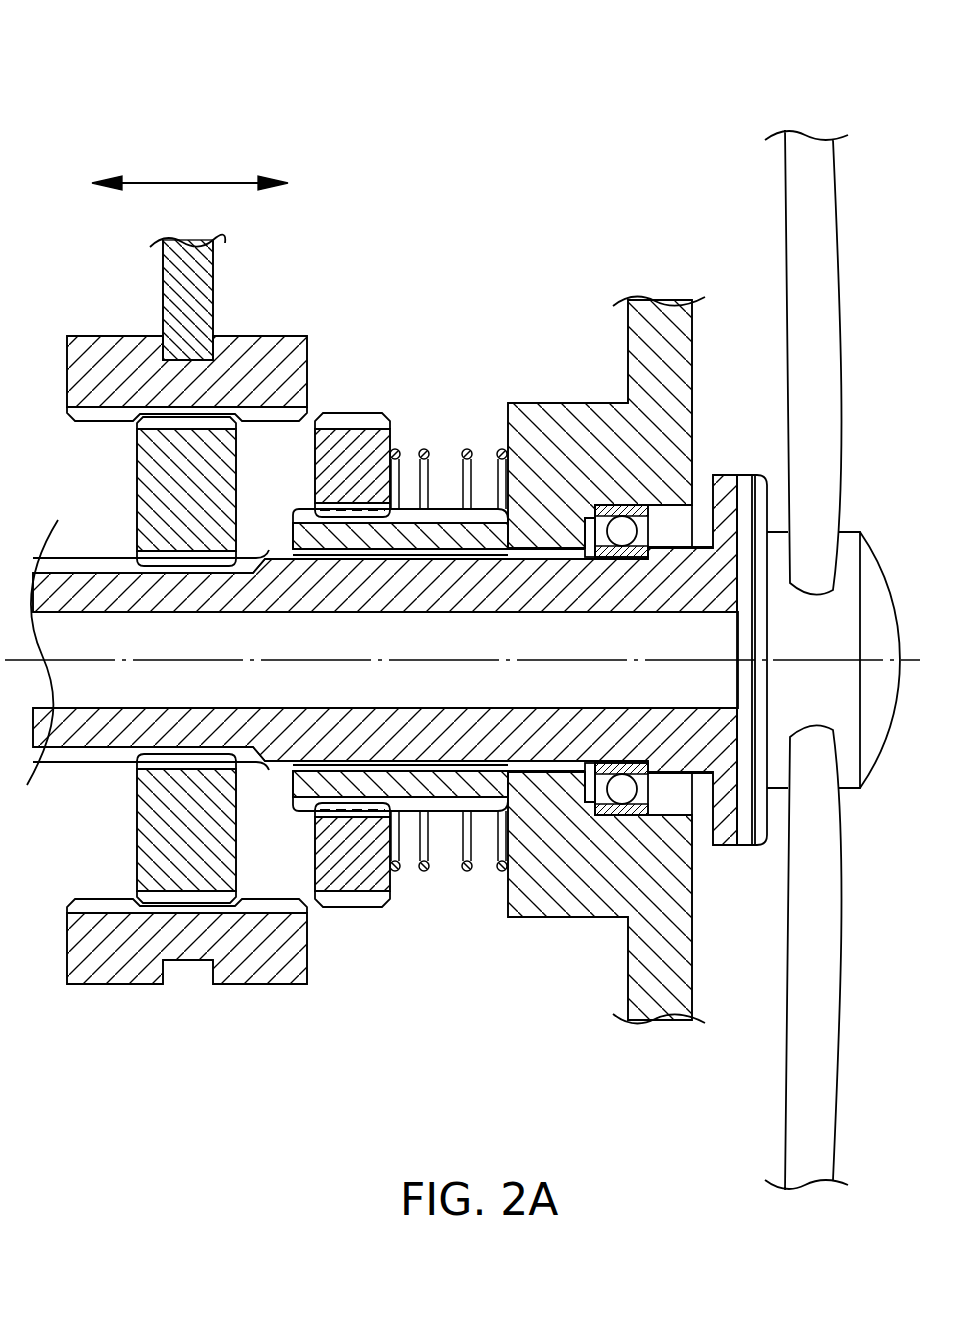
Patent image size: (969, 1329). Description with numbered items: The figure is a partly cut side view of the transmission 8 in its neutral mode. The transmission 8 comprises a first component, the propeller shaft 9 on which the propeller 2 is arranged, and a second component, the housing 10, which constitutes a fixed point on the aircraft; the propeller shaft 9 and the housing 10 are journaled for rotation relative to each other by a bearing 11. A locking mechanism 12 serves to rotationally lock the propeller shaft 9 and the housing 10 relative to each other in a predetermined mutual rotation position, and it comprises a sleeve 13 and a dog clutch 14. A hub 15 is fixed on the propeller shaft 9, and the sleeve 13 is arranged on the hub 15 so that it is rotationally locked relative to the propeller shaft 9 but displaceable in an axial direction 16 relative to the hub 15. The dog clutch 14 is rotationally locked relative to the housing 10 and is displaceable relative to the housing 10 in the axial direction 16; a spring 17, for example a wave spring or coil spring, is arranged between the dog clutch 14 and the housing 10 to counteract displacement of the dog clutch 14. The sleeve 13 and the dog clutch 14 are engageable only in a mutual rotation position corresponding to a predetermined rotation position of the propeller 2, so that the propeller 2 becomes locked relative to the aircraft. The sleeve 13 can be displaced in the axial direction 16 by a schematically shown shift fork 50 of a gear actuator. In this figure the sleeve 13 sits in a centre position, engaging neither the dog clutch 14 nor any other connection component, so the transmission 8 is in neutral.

The propeller 2 is at (808, 212).
The transmission 8 is at (88, 60).
The propeller shaft 9 is at (77, 598).
The housing 10 is at (555, 435).
The bearing 11 is at (598, 503).
The locking mechanism 12 is at (368, 268).
The sleeve 13 is at (288, 362).
The dog clutch 14 is at (363, 446).
The hub 15 is at (178, 497).
The axial direction 16 is at (186, 183).
The spring 17 is at (465, 447).
The shift fork 50 is at (190, 293).